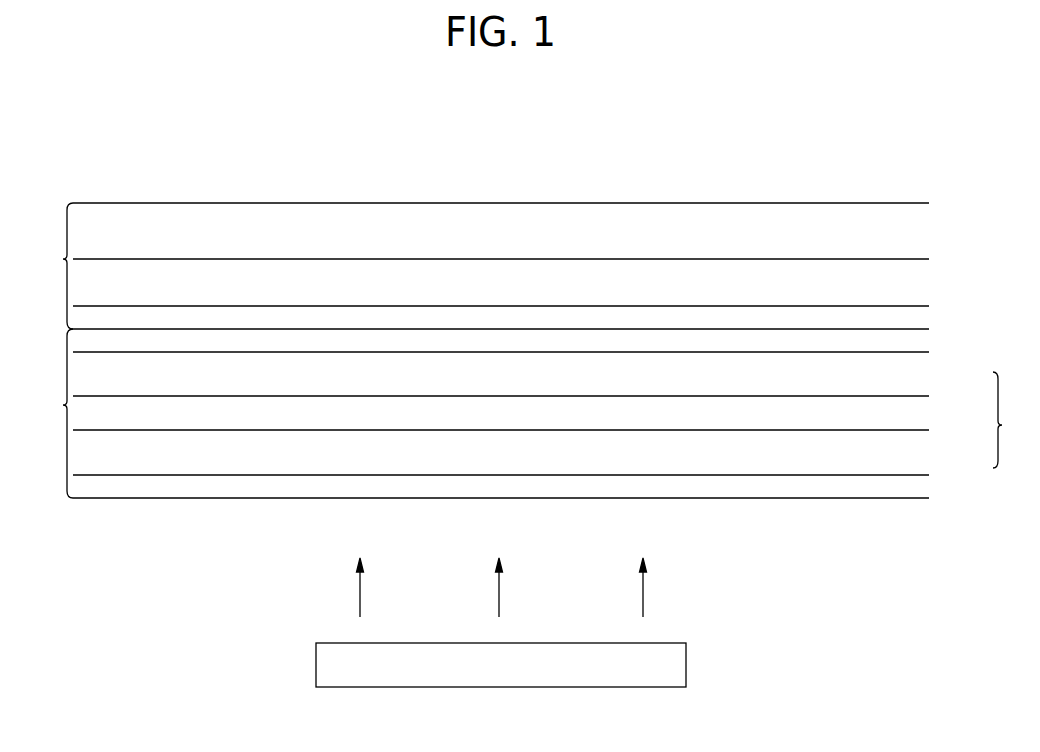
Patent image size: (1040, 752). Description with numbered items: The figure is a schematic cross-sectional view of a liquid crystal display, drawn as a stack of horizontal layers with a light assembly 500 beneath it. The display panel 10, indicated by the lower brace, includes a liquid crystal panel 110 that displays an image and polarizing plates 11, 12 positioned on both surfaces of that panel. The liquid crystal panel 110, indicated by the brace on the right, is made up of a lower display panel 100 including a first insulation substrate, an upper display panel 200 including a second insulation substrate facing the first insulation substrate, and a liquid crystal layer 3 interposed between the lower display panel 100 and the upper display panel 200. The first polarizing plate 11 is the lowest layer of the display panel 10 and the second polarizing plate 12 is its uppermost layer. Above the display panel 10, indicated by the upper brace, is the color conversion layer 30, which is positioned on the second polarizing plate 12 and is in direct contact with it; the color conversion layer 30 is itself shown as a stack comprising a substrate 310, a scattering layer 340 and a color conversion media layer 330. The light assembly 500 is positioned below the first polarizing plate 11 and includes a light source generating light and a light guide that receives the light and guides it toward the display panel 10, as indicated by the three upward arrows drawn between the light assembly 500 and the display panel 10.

The display panel 10 is at (483, 413).
The color conversion layer 30 is at (483, 266).
The substrate 310 is at (916, 233).
The scattering layer 340 is at (916, 290).
The color conversion media layer 330 is at (916, 318).
The second polarizing plate 12 is at (916, 342).
The upper display panel 200 is at (916, 374).
The liquid crystal layer 3 is at (916, 416).
The lower display panel 100 is at (916, 457).
The first polarizing plate 11 is at (916, 494).
The liquid crystal panel 110 is at (554, 413).
The light assembly 500 is at (686, 667).